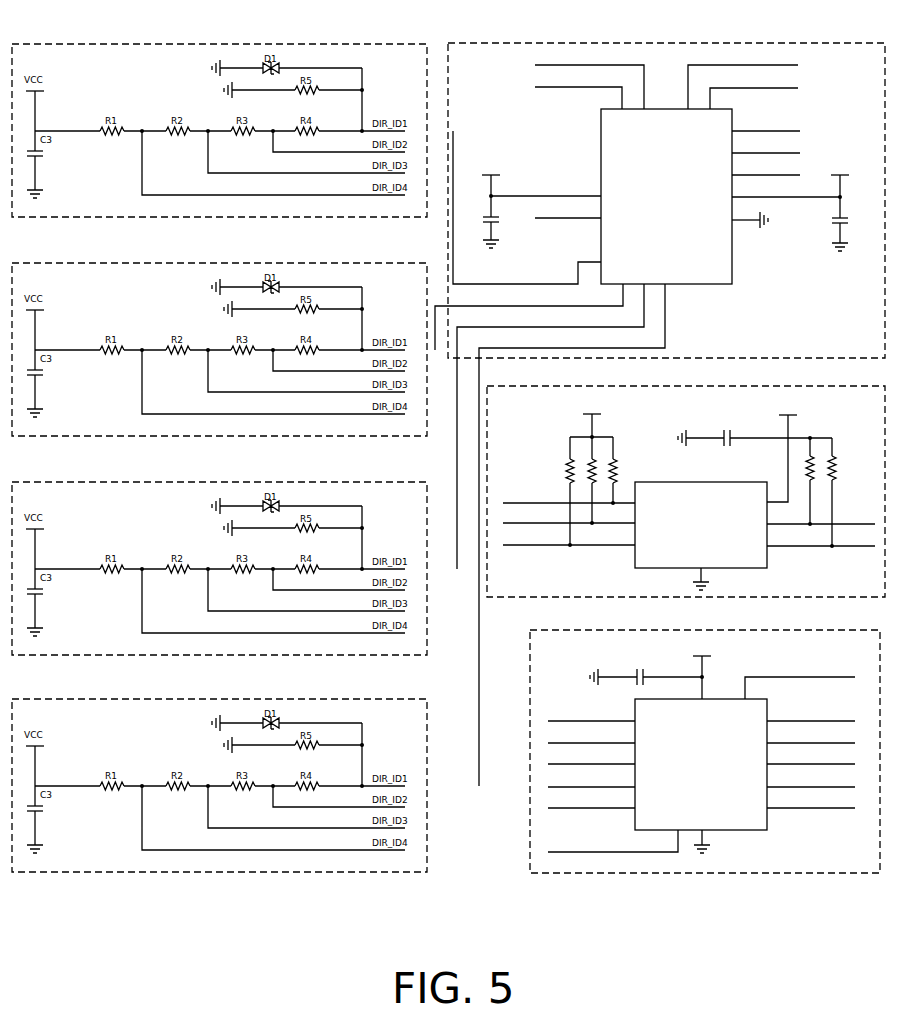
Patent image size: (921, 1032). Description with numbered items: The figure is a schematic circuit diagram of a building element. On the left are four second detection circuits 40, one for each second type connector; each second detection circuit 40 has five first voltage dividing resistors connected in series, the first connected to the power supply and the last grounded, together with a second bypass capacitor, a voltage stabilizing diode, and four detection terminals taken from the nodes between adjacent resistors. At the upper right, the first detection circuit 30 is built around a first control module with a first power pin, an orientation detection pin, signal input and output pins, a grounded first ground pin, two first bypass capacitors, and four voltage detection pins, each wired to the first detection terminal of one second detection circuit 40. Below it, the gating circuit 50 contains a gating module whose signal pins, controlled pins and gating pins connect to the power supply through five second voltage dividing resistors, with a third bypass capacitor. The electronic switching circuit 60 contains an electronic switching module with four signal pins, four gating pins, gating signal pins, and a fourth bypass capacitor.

The first detection circuit 30 is at (663, 43).
The second detection circuit 40 is at (216, 44).
The gating circuit 50 is at (677, 386).
The electronic switching circuit 60 is at (723, 630).